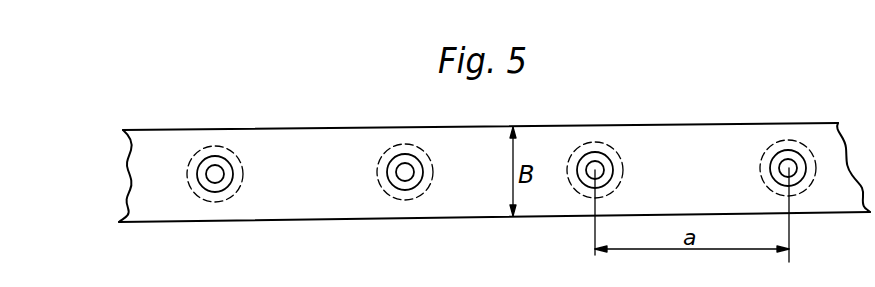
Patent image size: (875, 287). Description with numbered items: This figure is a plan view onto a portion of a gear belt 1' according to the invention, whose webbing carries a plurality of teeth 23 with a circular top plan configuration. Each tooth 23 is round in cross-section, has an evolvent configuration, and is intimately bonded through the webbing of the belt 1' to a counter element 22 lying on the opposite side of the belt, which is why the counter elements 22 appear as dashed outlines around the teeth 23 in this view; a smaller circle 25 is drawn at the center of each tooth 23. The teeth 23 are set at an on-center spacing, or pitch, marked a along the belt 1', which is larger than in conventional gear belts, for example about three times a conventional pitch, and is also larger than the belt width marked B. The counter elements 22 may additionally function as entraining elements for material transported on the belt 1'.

The gear belt 1' is at (494, 156).
The counter elements 22 is at (197, 196).
The teeth 23 is at (241, 182).
The hole 25 is at (215, 174).